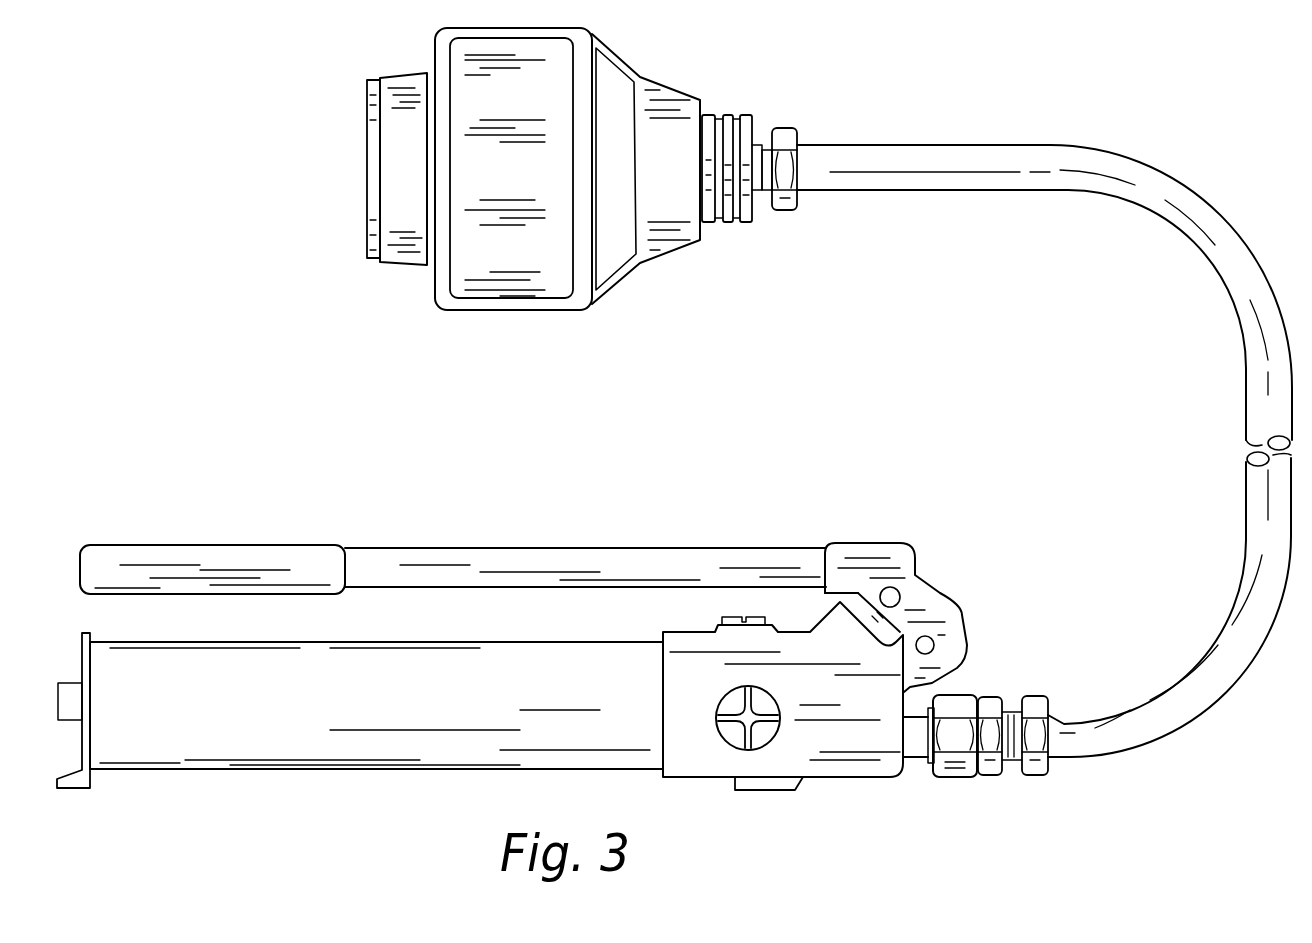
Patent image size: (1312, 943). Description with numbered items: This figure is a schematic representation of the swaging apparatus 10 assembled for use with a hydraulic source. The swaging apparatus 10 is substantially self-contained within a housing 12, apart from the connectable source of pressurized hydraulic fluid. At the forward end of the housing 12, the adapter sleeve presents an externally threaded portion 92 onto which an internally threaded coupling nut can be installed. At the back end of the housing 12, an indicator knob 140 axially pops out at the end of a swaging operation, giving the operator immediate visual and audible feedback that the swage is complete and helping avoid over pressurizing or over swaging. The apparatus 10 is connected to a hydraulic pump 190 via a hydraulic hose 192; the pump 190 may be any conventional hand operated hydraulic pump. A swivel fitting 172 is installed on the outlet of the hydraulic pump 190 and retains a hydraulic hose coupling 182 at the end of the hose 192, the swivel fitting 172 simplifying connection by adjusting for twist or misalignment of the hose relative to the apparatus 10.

The swaging apparatus 10 is at (375, 330).
The housing 12 is at (540, 288).
The externally threaded portion 92 is at (400, 86).
The indicator knob 140 is at (727, 224).
The hydraulic hose 192 is at (1172, 192).
The swivel fitting 172 is at (968, 693).
The hydraulic hose coupling 182 is at (1022, 692).
The hydraulic pump 190 is at (353, 770).